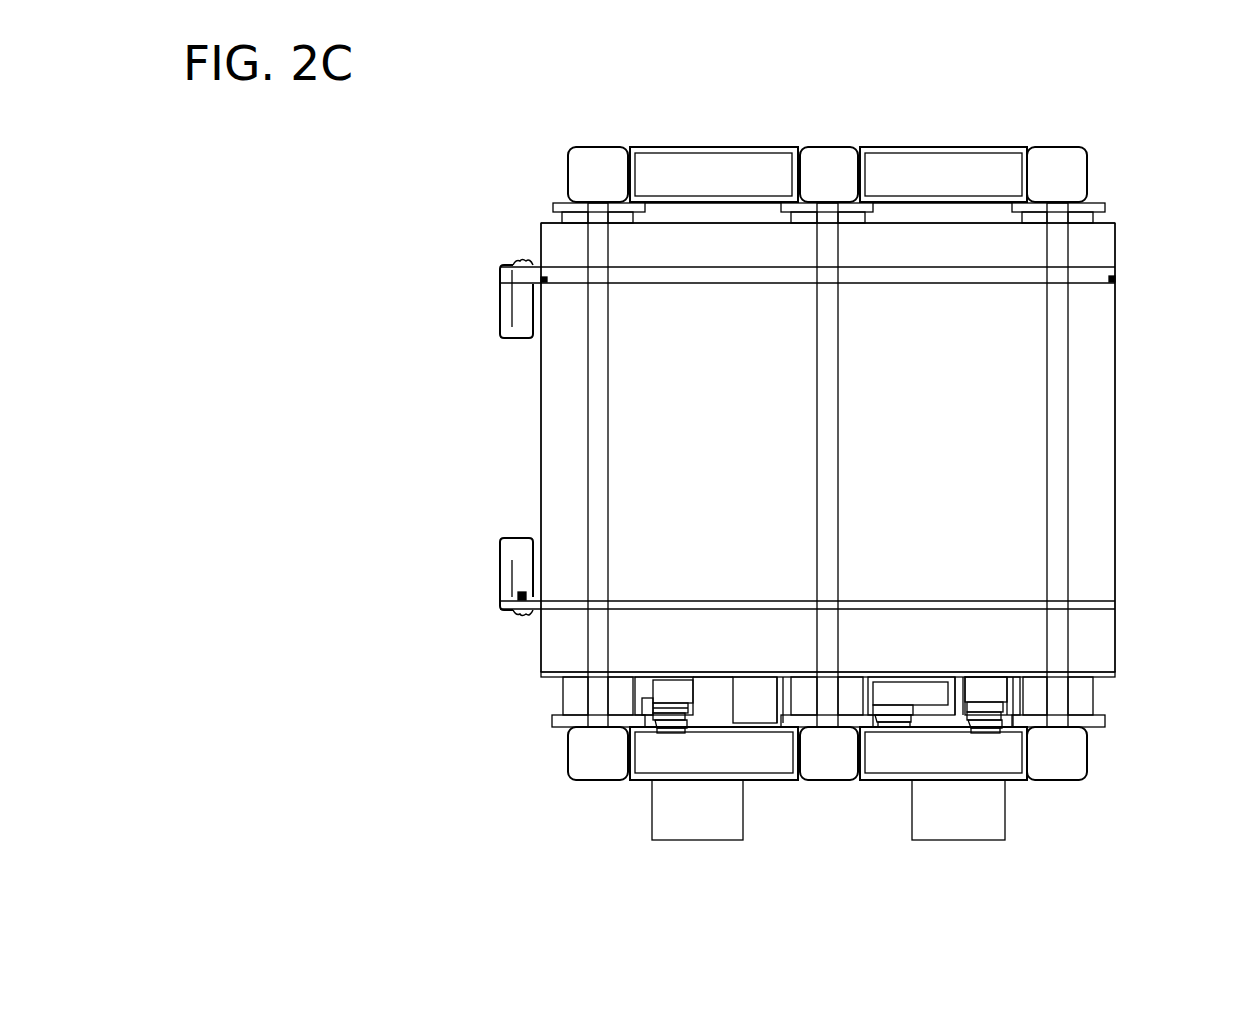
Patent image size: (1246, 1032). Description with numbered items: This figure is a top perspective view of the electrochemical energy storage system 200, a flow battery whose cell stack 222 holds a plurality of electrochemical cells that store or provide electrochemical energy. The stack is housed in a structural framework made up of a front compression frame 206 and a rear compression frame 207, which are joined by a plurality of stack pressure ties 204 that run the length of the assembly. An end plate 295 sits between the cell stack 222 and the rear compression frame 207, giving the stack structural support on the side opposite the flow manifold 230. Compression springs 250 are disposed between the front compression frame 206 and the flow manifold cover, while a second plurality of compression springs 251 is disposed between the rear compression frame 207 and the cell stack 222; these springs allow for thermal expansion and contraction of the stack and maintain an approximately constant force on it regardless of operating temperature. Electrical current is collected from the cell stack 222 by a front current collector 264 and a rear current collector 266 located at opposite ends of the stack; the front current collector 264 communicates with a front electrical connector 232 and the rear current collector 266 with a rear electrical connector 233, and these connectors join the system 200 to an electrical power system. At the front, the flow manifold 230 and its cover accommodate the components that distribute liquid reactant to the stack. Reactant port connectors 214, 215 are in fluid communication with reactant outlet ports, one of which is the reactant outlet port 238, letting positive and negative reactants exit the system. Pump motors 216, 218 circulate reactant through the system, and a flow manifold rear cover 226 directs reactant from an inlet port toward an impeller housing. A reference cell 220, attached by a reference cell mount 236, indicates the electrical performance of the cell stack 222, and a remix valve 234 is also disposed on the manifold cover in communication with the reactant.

The electrochemical energy storage system 200 is at (390, 182).
The rear compression frame 207 is at (600, 170).
The second plurality of compression springs 251 is at (556, 205).
The compression springs 250 is at (805, 688).
The stack pressure ties 204 is at (600, 452).
The cell stack 222 is at (541, 420).
The flow manifold 230 is at (1120, 632).
The end plate 295 is at (1117, 228).
The rear current collector 266 is at (930, 287).
The front current collector 264 is at (690, 600).
The flow manifold rear cover 226 is at (553, 676).
The rear electrical connector 233 is at (498, 275).
The front electrical connector 232 is at (498, 540).
The reactant outlet port 238 is at (665, 686).
The reactant port connector 214 is at (657, 733).
The remix valve 234 is at (750, 718).
The reference cell 220 is at (893, 686).
The reference cell mount 236 is at (993, 690).
The reactant port connector 215 is at (1000, 730).
The front compression frame 206 is at (580, 783).
The pump motor 216 is at (687, 842).
The pump motor 218 is at (946, 842).